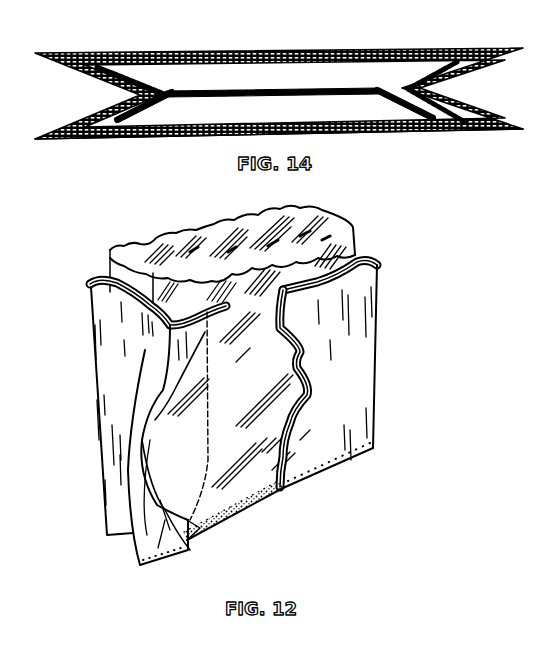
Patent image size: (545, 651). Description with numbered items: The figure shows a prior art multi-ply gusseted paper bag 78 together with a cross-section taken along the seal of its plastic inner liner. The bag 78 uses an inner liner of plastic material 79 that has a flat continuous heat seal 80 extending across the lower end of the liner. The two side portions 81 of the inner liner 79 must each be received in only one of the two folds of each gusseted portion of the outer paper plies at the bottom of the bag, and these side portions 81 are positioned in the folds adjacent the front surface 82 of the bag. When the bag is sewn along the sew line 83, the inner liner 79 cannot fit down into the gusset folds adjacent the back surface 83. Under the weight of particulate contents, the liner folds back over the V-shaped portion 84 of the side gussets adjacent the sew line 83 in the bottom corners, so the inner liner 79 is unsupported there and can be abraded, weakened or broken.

In FIG. 14, the multi-ply gusseted bag 78 is at (260, 46).
In FIG. 12, the multi-ply gusseted bag 78 is at (379, 402).
In FIG. 14, the inner liner of plastic material 79 is at (281, 92).
In FIG. 12, the inner liner of plastic material 79 is at (268, 378).
In FIG. 14, the flat continuous heat seal 80 is at (203, 72).
In FIG. 12, the flat continuous heat seal 80 is at (251, 501).
In FIG. 14, the side portions of the inner liner 81 is at (145, 104).
In FIG. 12, the side portions of the inner liner 81 is at (207, 524).
In FIG. 14, the front surface of the bag 82 is at (347, 132).
In FIG. 12, the sew line 83 is at (330, 467).
In FIG. 12, the V-shaped portion of the side gussets 84 is at (158, 552).